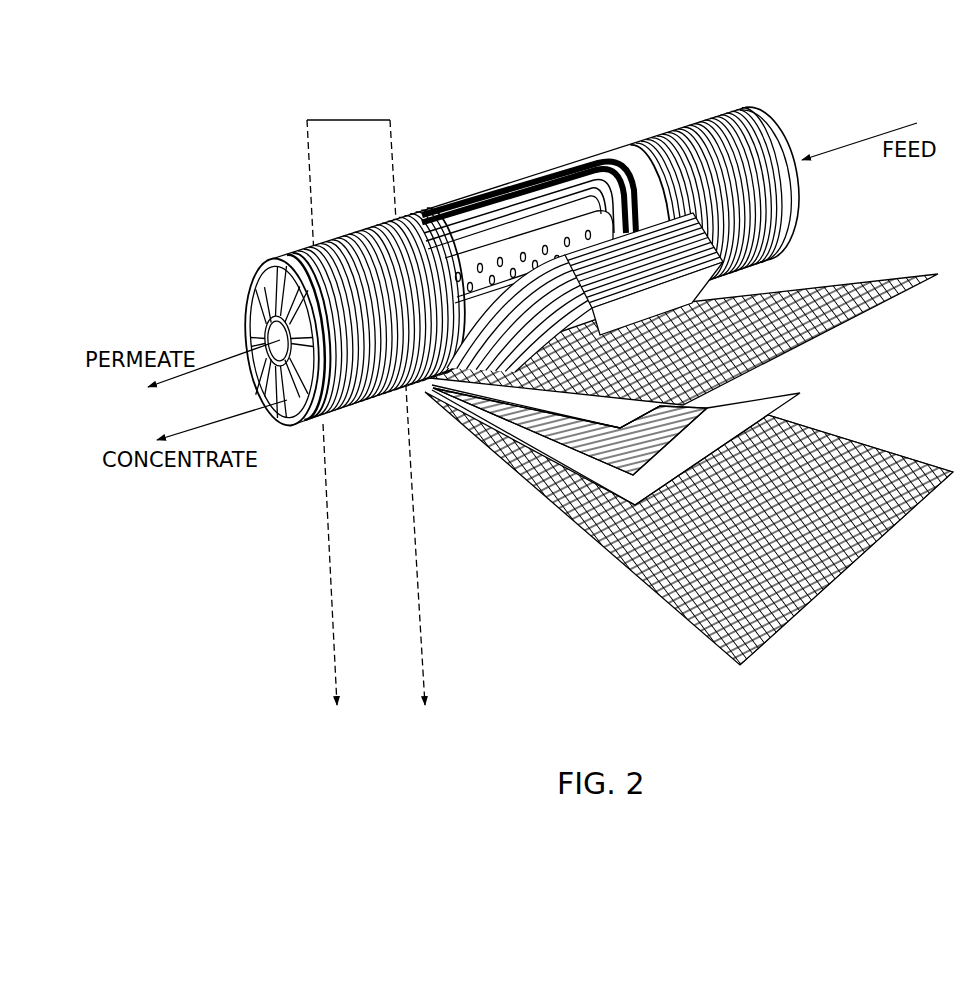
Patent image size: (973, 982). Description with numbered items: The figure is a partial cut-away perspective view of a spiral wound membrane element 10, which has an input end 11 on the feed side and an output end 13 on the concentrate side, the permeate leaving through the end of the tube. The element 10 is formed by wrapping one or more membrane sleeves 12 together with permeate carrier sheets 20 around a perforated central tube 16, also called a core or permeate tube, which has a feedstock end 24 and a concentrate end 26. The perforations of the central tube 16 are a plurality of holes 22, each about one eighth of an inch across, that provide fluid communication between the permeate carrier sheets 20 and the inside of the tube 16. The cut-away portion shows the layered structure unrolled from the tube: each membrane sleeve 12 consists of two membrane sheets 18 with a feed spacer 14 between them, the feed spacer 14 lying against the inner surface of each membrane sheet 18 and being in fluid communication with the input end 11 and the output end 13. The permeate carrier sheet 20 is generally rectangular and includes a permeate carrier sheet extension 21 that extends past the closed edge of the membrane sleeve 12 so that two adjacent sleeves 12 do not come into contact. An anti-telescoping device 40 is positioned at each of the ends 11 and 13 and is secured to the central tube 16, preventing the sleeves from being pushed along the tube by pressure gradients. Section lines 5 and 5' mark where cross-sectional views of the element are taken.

The section line 5 is at (348, 430).
The section line 5' is at (412, 430).
The spiral wound membrane element 10 is at (260, 515).
The input end 11 is at (798, 201).
The membrane sleeve 12 is at (442, 525).
The output end 13 is at (252, 271).
The feed spacer 14 is at (508, 422).
The perforated central tube 16 is at (533, 243).
The membrane sheet 18 is at (487, 392).
The permeate carrier sheet 20 is at (783, 287).
The permeate carrier sheet extension 21 is at (838, 338).
The holes 22 is at (465, 203).
The feedstock end 24 is at (790, 147).
The concentrate end 26 is at (275, 330).
The anti-telescoping device 40 is at (782, 125).